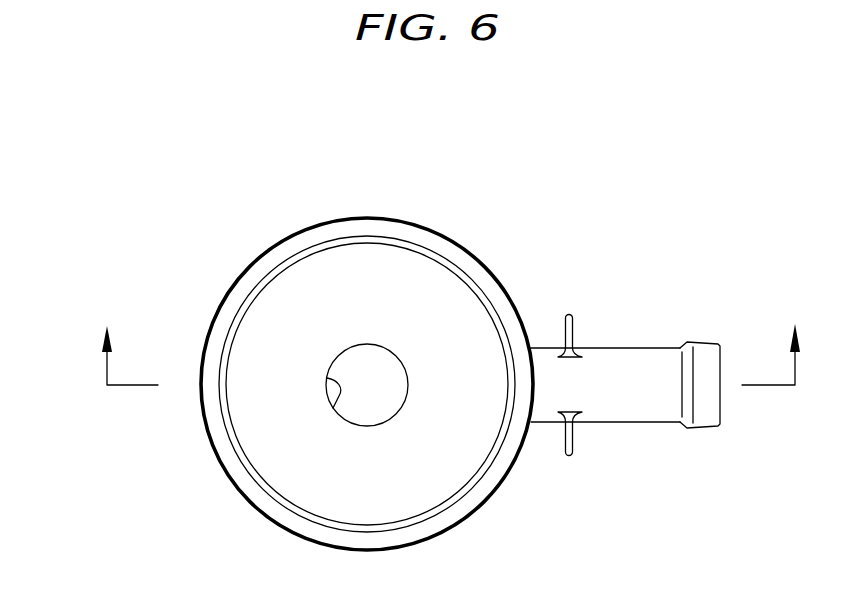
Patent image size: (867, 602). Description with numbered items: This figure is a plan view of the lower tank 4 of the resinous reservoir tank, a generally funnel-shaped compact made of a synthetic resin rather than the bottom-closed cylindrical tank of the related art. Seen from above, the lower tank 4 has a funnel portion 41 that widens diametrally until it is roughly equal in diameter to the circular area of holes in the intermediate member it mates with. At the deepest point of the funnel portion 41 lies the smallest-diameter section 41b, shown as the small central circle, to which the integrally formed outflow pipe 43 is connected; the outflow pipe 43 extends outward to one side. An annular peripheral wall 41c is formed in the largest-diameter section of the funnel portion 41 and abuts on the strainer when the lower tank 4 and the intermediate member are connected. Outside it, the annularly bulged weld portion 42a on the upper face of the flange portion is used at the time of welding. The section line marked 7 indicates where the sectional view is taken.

The lower tank 4 is at (460, 220).
The funnel portion 41 is at (363, 268).
The smallest-diameter section 41b is at (333, 402).
The annular peripheral wall 41c is at (284, 268).
The annularly bulged weld portion 42a is at (502, 301).
The outflow pipe 43 is at (625, 403).
The section line VII-VII 7 is at (451, 339).